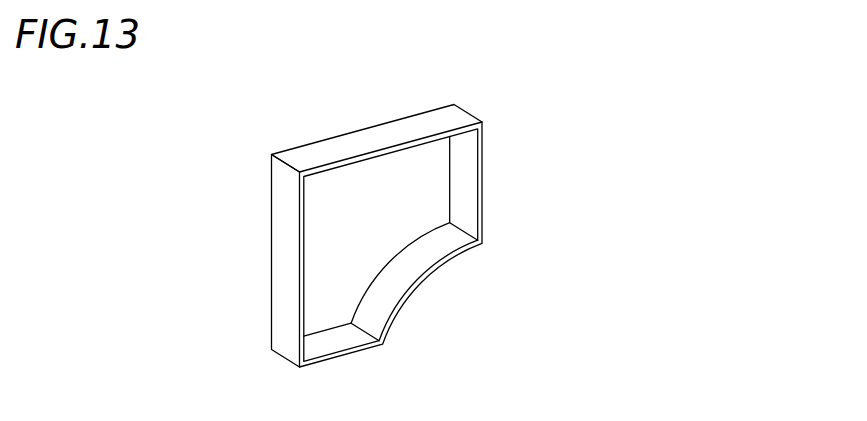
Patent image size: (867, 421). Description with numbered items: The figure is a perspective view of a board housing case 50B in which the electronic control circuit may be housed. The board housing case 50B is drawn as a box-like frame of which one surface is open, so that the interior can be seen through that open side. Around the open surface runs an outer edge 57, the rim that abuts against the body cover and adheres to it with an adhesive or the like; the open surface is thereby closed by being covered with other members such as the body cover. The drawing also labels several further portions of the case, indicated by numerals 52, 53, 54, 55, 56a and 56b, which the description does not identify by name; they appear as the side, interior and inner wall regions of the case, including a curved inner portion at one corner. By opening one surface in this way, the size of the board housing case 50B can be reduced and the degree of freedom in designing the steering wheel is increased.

The board housing case 50B is at (461, 82).
The side wall 52 is at (280, 205).
The plate portion 53 is at (320, 197).
The inner side wall 54 is at (465, 177).
The top wall 55 is at (383, 137).
The inner bottom wall 56a is at (332, 342).
The curved inner wall 56b is at (395, 275).
The outer edge 57 is at (437, 132).